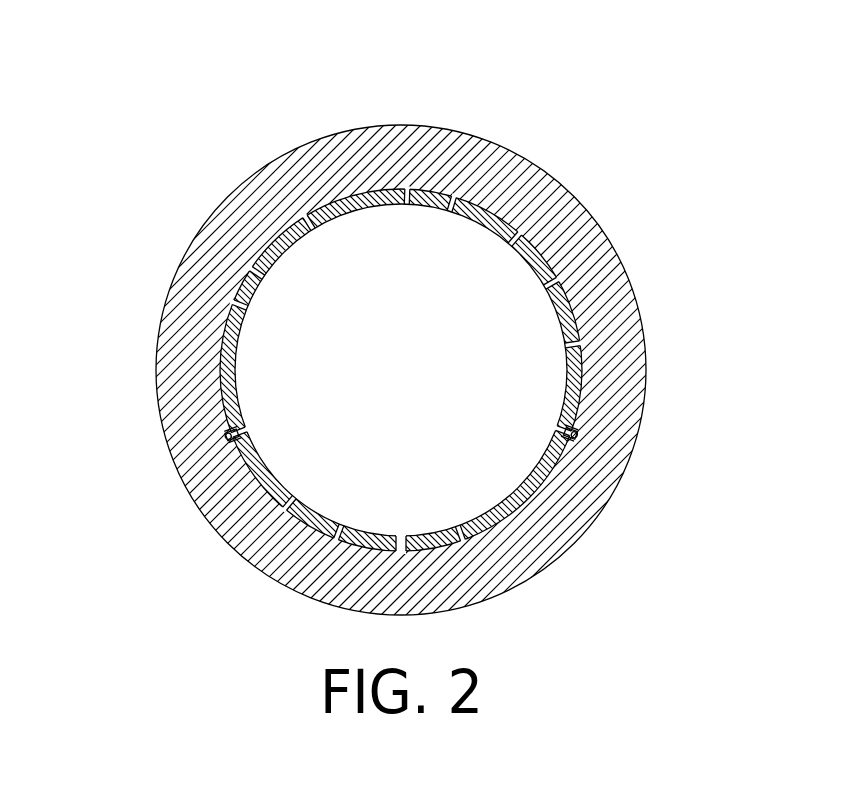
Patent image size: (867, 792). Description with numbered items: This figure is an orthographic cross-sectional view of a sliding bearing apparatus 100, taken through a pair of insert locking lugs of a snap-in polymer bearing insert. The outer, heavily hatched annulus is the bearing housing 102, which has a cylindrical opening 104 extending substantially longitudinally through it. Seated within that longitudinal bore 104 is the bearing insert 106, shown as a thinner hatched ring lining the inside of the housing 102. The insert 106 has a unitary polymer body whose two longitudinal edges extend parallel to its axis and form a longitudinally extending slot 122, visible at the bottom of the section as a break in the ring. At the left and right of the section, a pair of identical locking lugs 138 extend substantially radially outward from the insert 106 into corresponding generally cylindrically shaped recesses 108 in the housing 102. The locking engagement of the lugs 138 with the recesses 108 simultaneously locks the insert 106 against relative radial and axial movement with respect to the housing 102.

The sliding bearing apparatus 100 is at (515, 118).
The bearing housing 102 is at (603, 247).
The cylindrical opening 104 is at (293, 292).
The bearing insert 106 is at (495, 508).
The recesses 108 is at (224, 445).
The slot 122 is at (400, 527).
The locking lugs 138 is at (220, 430).